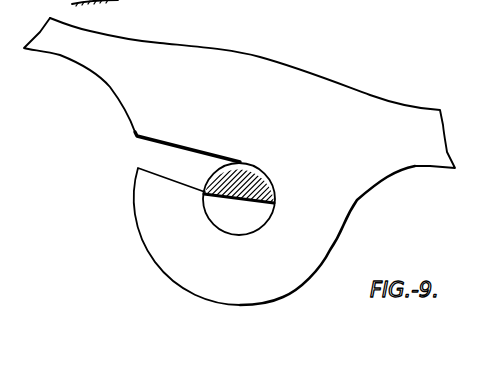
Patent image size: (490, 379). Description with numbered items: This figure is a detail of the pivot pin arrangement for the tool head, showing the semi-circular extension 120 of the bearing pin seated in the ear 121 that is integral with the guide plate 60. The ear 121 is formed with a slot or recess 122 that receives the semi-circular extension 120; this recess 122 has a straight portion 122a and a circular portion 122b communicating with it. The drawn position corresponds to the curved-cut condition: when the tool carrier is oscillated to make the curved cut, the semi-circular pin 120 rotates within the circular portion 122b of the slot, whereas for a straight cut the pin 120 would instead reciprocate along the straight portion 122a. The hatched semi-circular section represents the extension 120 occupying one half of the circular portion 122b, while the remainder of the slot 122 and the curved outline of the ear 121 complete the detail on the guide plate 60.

The guide plate 60 is at (427, 121).
The extension 120 is at (210, 177).
The ear 121 is at (277, 284).
The recess 122 is at (222, 214).
The straight portion 122a is at (188, 145).
The circular portion 122b is at (263, 225).